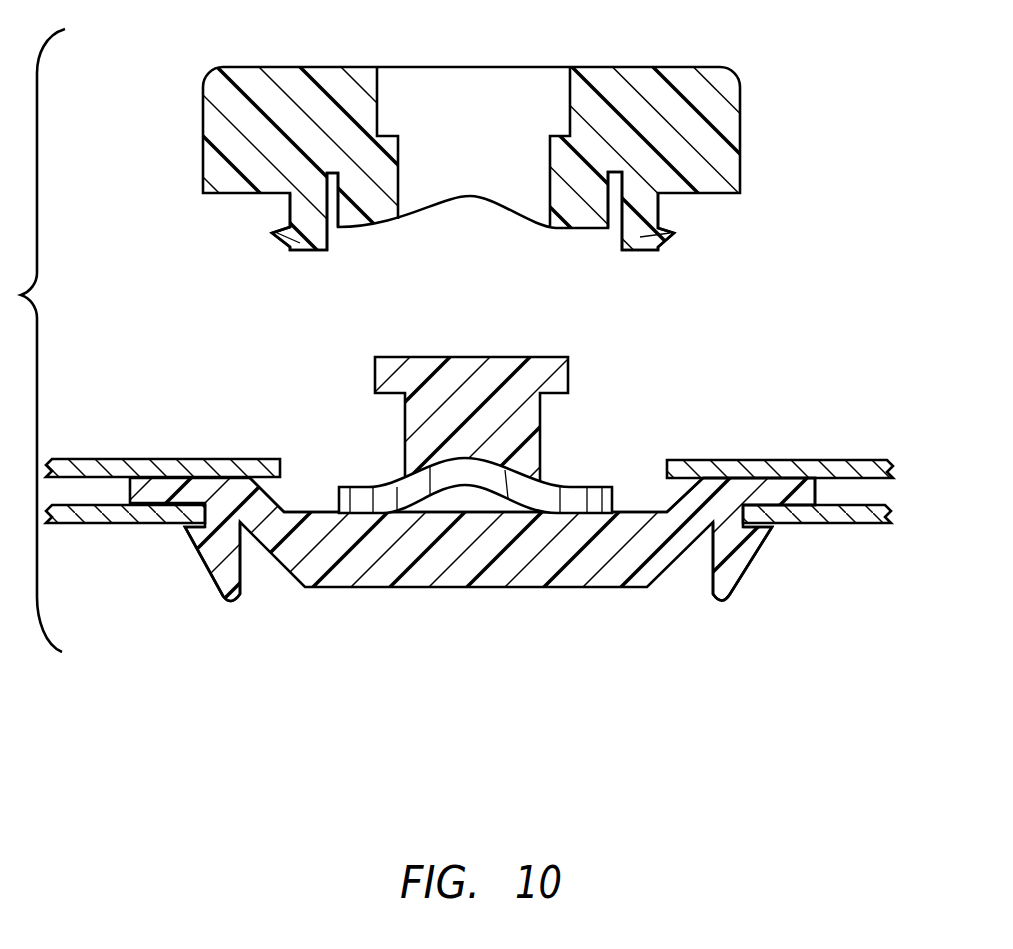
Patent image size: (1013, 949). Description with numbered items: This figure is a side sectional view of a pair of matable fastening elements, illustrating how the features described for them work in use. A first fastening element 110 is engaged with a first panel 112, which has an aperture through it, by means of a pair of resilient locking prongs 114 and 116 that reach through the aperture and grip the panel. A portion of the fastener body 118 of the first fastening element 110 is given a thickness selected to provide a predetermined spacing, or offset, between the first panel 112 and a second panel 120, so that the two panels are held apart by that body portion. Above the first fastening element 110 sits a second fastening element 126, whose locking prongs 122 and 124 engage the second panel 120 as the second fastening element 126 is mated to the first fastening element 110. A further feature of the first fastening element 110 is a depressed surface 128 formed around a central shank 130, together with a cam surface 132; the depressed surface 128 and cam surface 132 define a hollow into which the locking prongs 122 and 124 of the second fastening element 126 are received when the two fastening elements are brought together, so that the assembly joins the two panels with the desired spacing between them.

The first fastening element 110 is at (628, 560).
The first panel 112 is at (841, 523).
The resilient locking prong 114 is at (746, 560).
The resilient locking prong 116 is at (202, 553).
The fastener body 118 is at (768, 495).
The second panel 120 is at (828, 460).
The locking prong 122 is at (287, 232).
The locking prong 124 is at (640, 237).
The second fastening element 126 is at (633, 80).
The depressed surface 128 is at (316, 505).
The shank 130 is at (527, 413).
The cam surface 132 is at (537, 490).